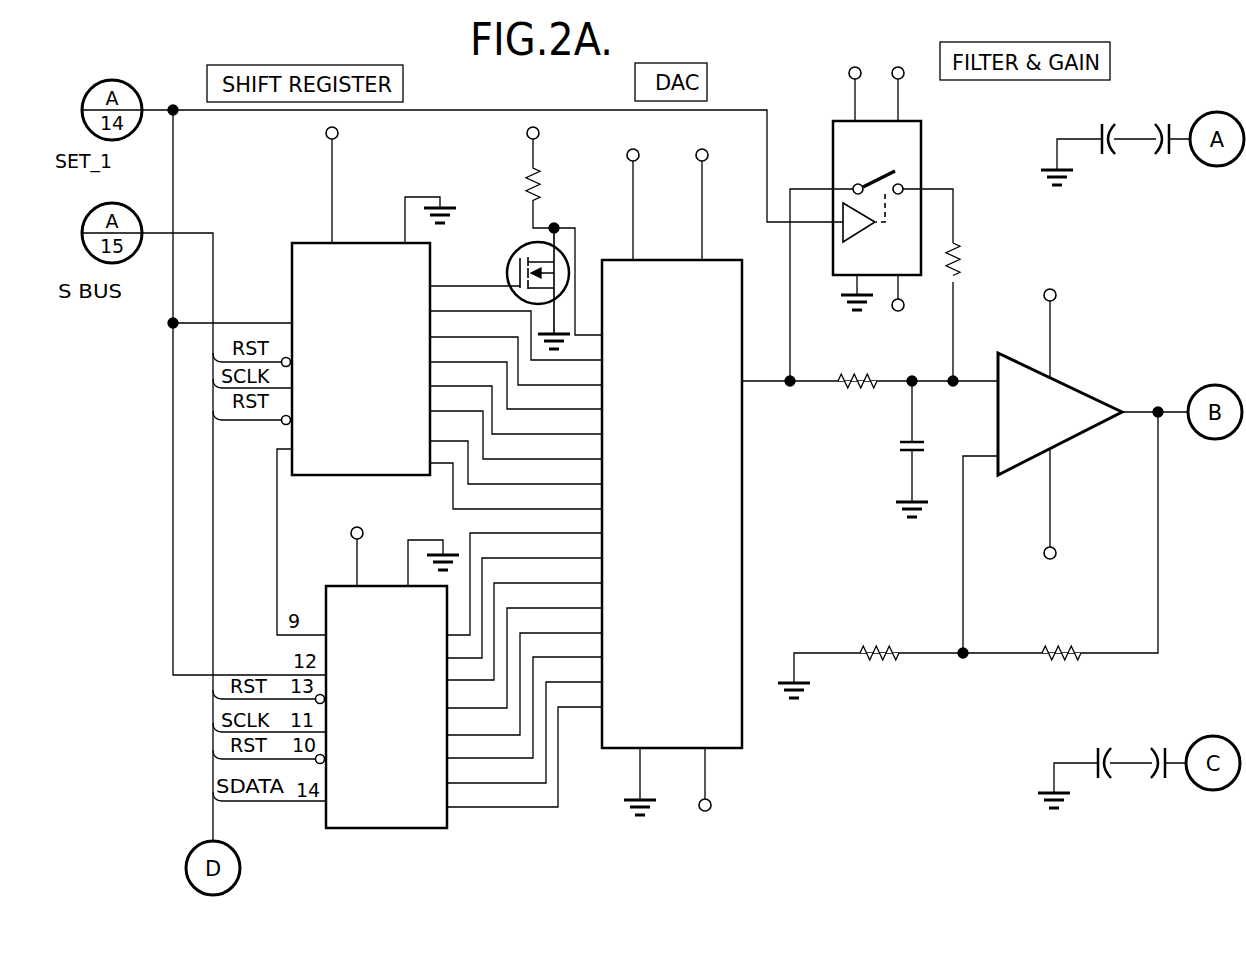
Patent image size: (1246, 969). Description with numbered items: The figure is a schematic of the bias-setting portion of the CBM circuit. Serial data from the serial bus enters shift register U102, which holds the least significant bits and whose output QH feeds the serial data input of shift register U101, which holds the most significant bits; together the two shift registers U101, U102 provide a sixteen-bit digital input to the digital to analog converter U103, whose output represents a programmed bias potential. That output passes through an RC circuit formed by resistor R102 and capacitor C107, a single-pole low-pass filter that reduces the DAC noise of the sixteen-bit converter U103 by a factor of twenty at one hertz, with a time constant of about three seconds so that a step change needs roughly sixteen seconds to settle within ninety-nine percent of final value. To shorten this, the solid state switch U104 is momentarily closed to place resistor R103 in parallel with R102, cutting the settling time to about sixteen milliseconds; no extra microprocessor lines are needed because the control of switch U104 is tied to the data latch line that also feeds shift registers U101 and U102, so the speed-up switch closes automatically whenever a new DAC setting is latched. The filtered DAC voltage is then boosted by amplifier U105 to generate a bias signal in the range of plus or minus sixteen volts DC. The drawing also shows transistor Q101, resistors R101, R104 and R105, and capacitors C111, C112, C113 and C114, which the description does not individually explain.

The shift register U101 is at (438, 381).
The shift register U102 is at (444, 677).
The Digital to Analog Converter (DAC) U103 is at (668, 482).
The solid state switch U104 is at (878, 224).
The amplifier U105 is at (1080, 424).
The MOSFET transistor Q101 is at (518, 288).
The resistor R101 is at (564, 231).
The resistor R102 is at (862, 366).
The resistor R103 is at (986, 259).
The resistor R104 is at (876, 666).
The resistor R105 is at (1059, 666).
The capacitor C107 is at (884, 449).
The electrolytic capacitor C111 is at (1086, 125).
The electrolytic capacitor C112 is at (1163, 132).
The electrolytic capacitor C113 is at (1085, 744).
The electrolytic capacitor C114 is at (1165, 750).